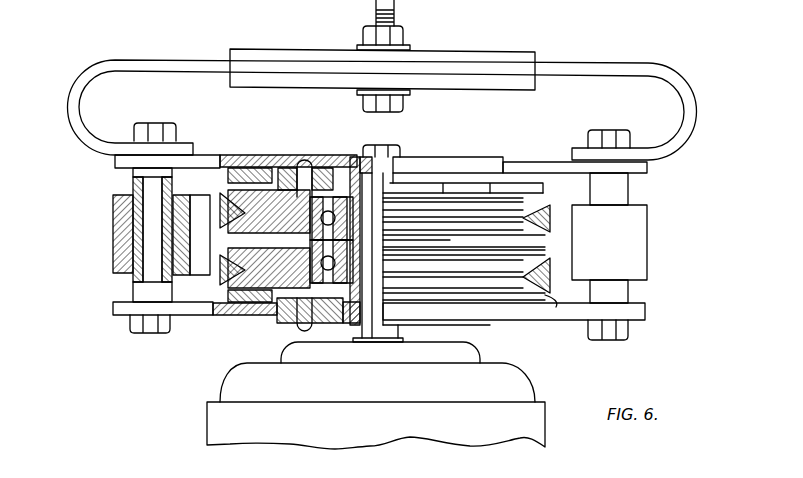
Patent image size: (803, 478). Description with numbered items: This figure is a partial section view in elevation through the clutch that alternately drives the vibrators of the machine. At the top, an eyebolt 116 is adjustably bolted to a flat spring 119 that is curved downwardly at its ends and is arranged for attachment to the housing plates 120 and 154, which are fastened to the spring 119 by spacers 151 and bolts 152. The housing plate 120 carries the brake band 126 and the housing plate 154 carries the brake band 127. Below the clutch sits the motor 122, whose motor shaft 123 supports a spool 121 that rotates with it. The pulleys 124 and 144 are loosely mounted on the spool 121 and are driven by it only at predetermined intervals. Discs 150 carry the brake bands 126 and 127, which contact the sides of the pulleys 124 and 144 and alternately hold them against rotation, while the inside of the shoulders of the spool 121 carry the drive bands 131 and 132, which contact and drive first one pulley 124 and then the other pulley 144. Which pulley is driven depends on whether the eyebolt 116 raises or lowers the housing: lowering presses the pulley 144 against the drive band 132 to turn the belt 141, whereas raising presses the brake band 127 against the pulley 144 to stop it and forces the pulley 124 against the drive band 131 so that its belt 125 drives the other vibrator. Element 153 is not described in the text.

The eyebolt 116 is at (397, 17).
The flat spring 119 is at (607, 63).
The housing plate 120 is at (648, 168).
The spool 121 is at (282, 318).
The motor 122 is at (545, 406).
The motor shaft 123 is at (392, 157).
The pulley 124 is at (578, 186).
The belt 125 is at (218, 203).
The brake band 126 is at (277, 154).
The brake band 127 is at (210, 310).
The drive band 131 is at (331, 158).
The drive band 132 is at (277, 313).
The belt 141 is at (222, 275).
The pulley 144 is at (516, 240).
The discs 150 is at (500, 157).
The spacers 151 is at (132, 185).
The bolts 152 is at (130, 325).
The block 153 is at (120, 230).
The housing plate 154 is at (647, 312).